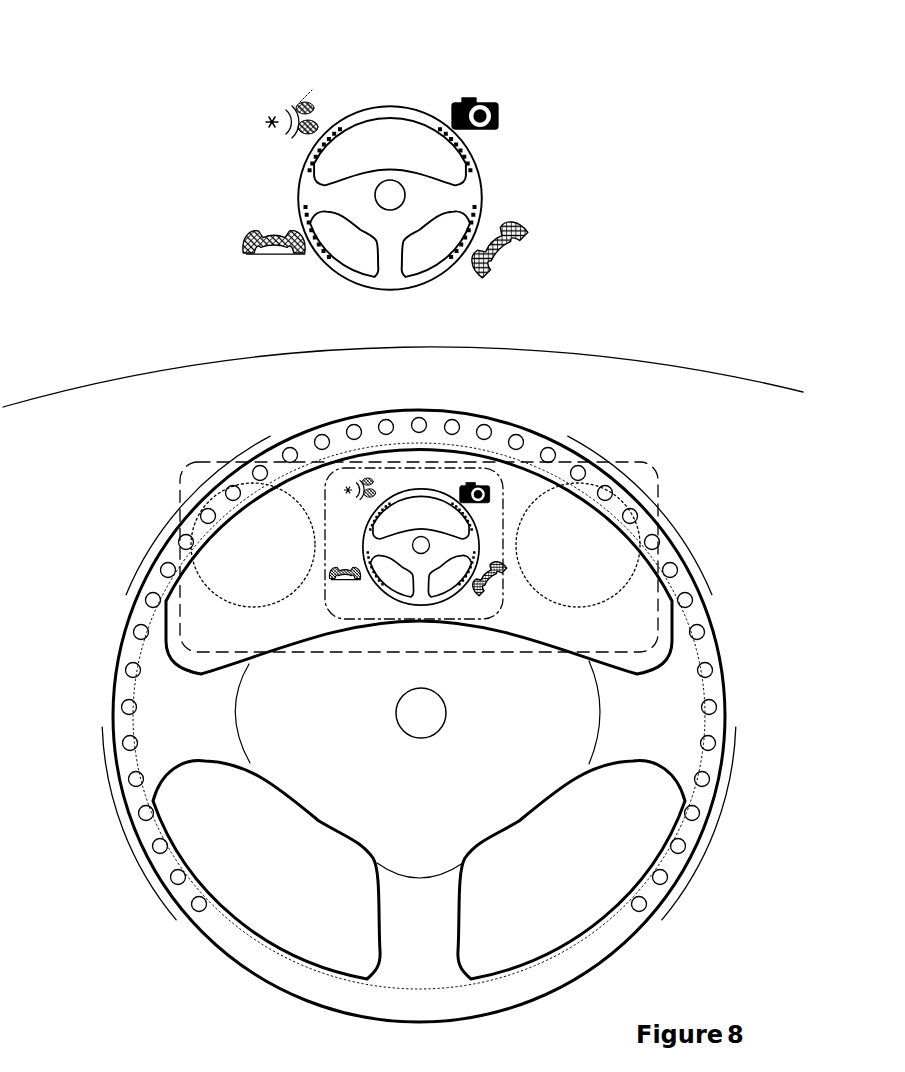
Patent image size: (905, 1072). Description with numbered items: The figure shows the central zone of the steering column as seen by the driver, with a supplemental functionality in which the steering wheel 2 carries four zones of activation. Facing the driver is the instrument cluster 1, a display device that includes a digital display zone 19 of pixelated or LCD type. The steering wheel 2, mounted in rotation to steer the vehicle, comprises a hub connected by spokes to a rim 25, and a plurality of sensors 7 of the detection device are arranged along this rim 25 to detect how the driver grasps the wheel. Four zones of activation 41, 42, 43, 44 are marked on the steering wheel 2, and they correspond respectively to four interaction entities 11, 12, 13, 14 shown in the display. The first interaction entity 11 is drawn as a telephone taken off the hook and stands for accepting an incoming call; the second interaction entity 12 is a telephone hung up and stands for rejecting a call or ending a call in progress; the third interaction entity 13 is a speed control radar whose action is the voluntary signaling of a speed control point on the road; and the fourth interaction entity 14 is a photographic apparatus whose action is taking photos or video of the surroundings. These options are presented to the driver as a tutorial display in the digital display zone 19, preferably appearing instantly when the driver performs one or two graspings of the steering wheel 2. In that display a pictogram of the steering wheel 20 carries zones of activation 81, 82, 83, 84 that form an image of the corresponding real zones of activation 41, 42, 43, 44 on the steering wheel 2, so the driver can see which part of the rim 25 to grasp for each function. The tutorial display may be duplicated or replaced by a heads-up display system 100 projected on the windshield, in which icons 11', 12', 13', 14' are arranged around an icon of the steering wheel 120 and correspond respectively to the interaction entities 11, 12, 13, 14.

The instrument cluster 1 is at (662, 458).
The steering wheel 2 is at (414, 694).
The sensors 7 is at (488, 430).
The first interaction entity 11 is at (531, 598).
The icon of the first interaction entity in the heads-up display 11' is at (524, 255).
The second interaction entity 12 is at (313, 606).
The icon of the second interaction entity in the heads-up display 12' is at (245, 264).
The third interaction entity 13 is at (290, 445).
The icon of the third interaction entity in the heads-up display 13' is at (264, 102).
The fourth interaction entity 14 is at (541, 443).
The icon of the fourth interaction entity in the heads-up display 14' is at (517, 98).
The digital display zone 19 is at (385, 470).
The pictogram of the steering wheel 20 is at (421, 488).
The rim 25 is at (116, 659).
The first zone of activation 41 is at (745, 802).
The second zone of activation 42 is at (105, 820).
The third zone of activation 43 is at (174, 514).
The fourth zone of activation 44 is at (692, 525).
The first zone of activation on the pictogram 81 is at (477, 204).
The second zone of activation on the pictogram 82 is at (302, 222).
The third zone of activation on the pictogram 83 is at (312, 152).
The fourth zone of activation on the pictogram 84 is at (472, 156).
The heads-up display system 100 is at (598, 45).
The icon of the steering wheel 120 is at (358, 108).